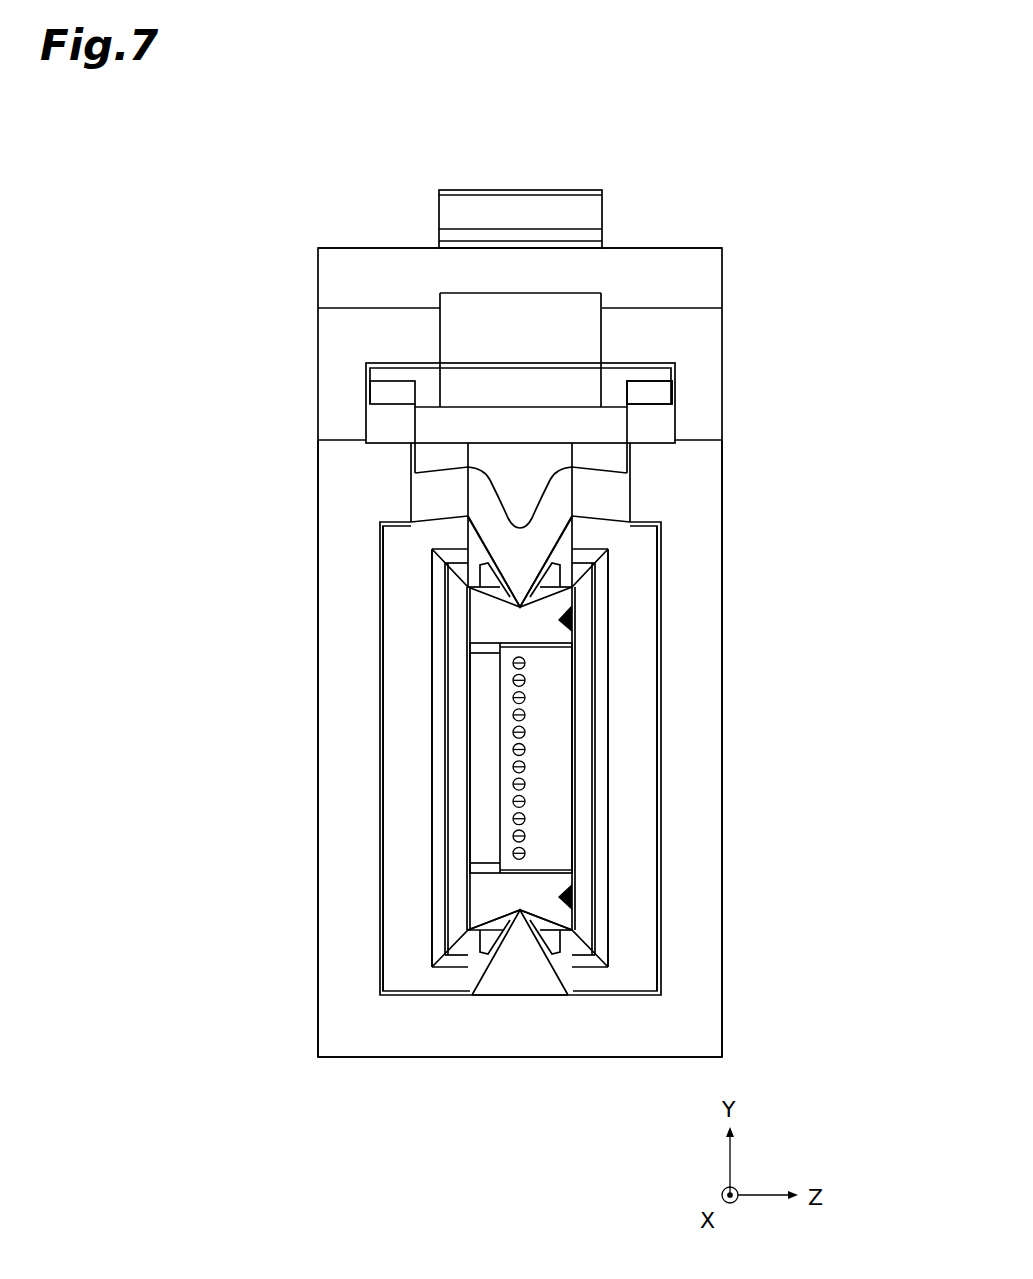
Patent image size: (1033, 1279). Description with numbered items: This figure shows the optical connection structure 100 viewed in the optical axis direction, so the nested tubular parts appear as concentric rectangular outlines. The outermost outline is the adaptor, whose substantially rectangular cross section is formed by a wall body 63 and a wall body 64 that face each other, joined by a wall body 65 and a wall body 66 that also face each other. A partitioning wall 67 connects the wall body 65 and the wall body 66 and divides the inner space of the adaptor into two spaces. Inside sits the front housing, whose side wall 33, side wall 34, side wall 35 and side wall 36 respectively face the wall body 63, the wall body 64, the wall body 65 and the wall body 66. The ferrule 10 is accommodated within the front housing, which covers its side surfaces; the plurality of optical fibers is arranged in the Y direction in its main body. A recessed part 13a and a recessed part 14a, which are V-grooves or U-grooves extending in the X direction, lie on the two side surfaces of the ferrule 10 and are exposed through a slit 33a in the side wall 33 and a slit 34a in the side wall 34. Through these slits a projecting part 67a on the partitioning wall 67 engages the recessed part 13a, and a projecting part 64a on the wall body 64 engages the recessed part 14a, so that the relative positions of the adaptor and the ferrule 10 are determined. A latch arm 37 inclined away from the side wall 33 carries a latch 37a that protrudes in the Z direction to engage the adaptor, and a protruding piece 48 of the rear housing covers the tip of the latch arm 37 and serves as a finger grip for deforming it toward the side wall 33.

The optical connection structure 100 is at (731, 178).
The wall body 63 is at (664, 268).
The wall body 64 is at (437, 1033).
The wall body 66 is at (326, 705).
The wall body 65 is at (705, 743).
The protruding piece 48 is at (556, 188).
The latch arm 37 is at (487, 380).
The latch 37a is at (662, 392).
The partitioning wall 67 is at (608, 487).
The projecting part 67a is at (535, 573).
The side wall 33 is at (600, 540).
The slit 33a is at (472, 540).
The recessed part 13a is at (500, 572).
The recessed part 14a is at (541, 946).
The ferrule 10 is at (577, 702).
The side wall 34 is at (597, 978).
The slit 34a is at (470, 975).
The projecting part 64a is at (520, 975).
The side wall 36 is at (405, 810).
The side wall 35 is at (636, 810).